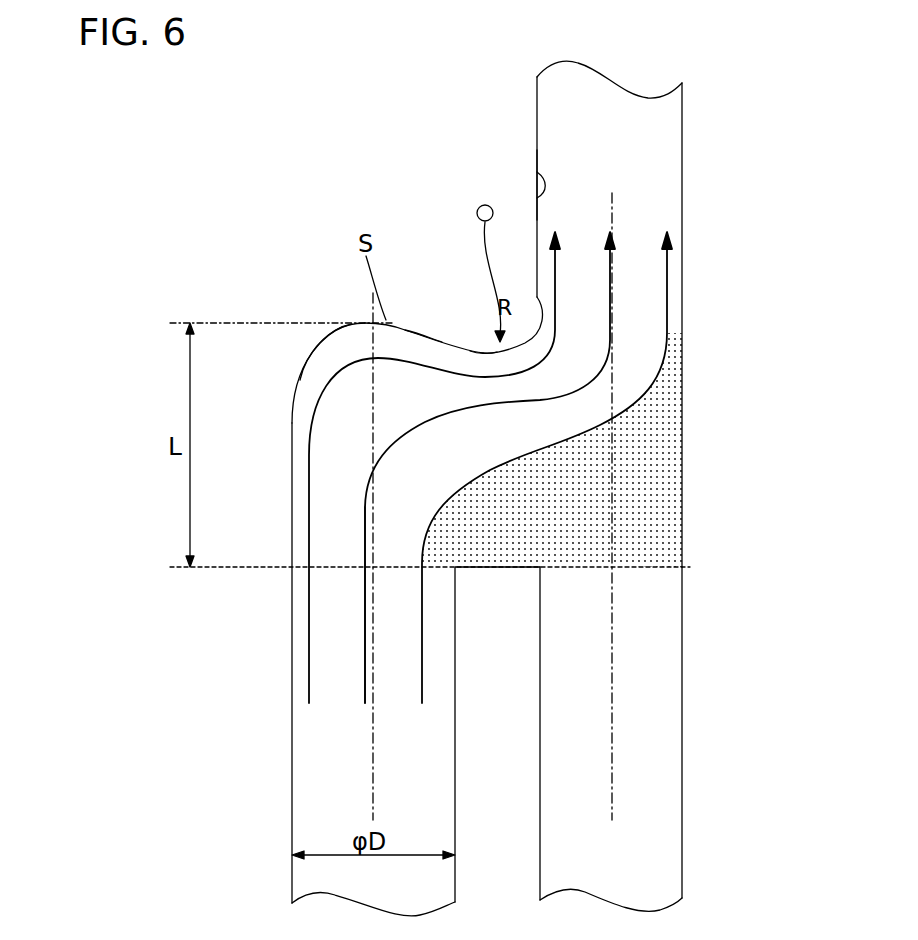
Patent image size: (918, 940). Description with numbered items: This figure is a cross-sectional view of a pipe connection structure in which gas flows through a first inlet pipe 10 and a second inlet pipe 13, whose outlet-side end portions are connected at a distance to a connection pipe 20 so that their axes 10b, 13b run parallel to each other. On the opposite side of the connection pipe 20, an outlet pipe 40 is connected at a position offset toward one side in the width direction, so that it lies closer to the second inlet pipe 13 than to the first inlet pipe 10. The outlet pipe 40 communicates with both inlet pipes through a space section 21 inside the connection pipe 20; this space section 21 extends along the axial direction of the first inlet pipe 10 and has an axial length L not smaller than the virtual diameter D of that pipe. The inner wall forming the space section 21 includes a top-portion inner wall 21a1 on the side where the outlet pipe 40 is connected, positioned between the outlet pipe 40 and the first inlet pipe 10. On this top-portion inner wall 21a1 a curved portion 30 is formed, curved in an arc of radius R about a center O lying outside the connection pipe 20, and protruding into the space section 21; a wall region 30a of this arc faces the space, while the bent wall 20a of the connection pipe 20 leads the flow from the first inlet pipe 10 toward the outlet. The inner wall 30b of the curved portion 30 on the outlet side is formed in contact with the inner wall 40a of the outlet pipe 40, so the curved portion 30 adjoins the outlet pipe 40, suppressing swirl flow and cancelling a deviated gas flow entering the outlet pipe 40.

The first inlet pipe 10 is at (292, 833).
The axis of the first inlet pipe 10b is at (372, 722).
The second inlet pipe 13 is at (684, 828).
The axis of the second inlet pipe 13b is at (612, 683).
The connection pipe 20 is at (308, 350).
The outer wall of bent portion 20a is at (322, 346).
The space section 21 is at (406, 435).
The top-portion inner wall 21a1 is at (482, 355).
The curved portion 30 is at (466, 342).
The top wall of connecting portion 30a is at (440, 340).
The inner wall of the curved portion 30b is at (545, 325).
The outlet pipe 40 is at (682, 150).
The inner wall of the outlet pipe 40a is at (537, 175).